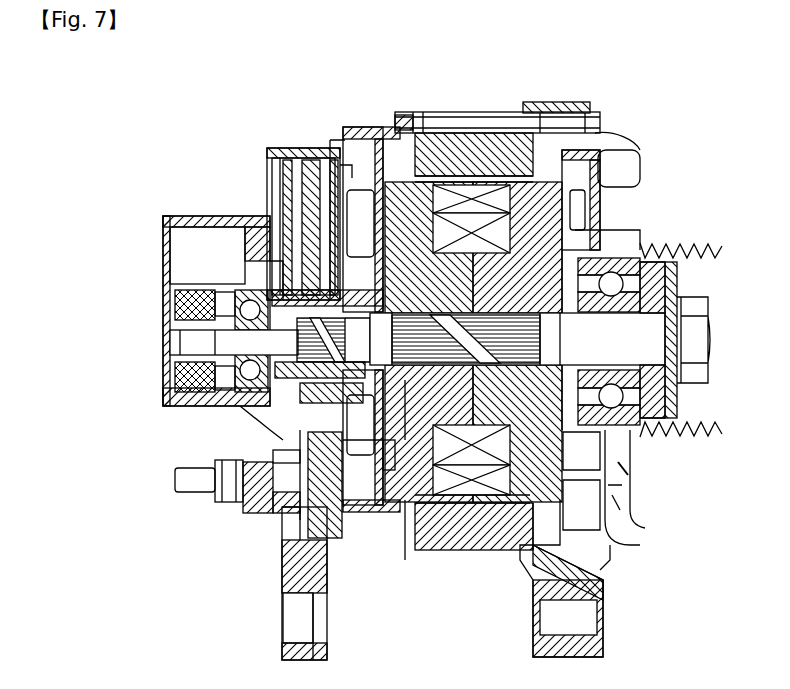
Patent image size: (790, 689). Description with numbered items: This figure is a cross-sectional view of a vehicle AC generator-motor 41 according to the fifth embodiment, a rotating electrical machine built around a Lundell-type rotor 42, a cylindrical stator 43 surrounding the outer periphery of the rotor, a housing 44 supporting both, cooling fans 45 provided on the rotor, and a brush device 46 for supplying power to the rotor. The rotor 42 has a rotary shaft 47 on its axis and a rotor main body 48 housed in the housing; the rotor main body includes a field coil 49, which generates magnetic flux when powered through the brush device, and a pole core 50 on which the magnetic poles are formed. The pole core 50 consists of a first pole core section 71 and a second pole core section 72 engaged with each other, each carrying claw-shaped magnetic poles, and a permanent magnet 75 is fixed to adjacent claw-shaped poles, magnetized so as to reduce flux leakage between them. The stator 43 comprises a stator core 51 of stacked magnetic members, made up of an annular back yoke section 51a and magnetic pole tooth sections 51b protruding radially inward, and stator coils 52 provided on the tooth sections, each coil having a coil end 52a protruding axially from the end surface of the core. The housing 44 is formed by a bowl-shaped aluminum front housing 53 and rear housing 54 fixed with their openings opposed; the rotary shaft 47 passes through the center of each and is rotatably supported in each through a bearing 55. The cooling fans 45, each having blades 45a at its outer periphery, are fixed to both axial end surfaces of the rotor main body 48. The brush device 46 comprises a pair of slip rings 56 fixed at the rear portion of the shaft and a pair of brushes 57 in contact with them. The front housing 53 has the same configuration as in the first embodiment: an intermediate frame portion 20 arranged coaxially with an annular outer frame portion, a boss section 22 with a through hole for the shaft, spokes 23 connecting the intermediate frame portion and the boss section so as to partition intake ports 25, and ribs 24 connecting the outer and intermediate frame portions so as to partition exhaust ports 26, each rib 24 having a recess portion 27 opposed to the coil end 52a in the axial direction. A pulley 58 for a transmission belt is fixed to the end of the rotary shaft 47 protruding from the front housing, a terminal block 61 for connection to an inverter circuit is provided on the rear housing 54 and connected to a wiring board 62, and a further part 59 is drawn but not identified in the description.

The intermediate frame portion 20 is at (610, 520).
The boss section 22 is at (636, 255).
The spokes 23 is at (629, 480).
The ribs 24 is at (623, 548).
The intake ports 25 is at (629, 497).
The exhaust ports 26 is at (625, 540).
The recess portion 27 is at (643, 535).
The vehicle AC generator-motor 41 is at (262, 148).
The Lundell-type rotor 42 is at (352, 470).
The cylindrical stator 43 is at (614, 172).
The housing 44 is at (337, 140).
The cooling fans 45 is at (348, 127).
The blades 45a is at (630, 202).
The brush device 46 is at (270, 200).
The rotary shaft 47 is at (635, 458).
The rotor main body 48 is at (388, 470).
The field coil 49 is at (483, 548).
The pole core 50 is at (556, 180).
The stator core 51 is at (507, 135).
The back yoke section 51a is at (480, 145).
The magnetic pole tooth sections 51b is at (452, 165).
The stator coils 52 is at (612, 142).
The coil end 52a is at (407, 112).
The front housing 53 is at (612, 150).
The rear housing 54 is at (380, 112).
The bearing 55 is at (190, 352).
The slip rings 56 is at (280, 403).
The brushes 57 is at (330, 160).
The pulley 58 is at (692, 256).
The mounting foot 59 is at (538, 605).
The terminal block 61 is at (196, 495).
The wiring board 62 is at (285, 540).
The first pole core section 71 is at (416, 385).
The second pole core section 72 is at (518, 522).
The permanent magnet 75 is at (455, 497).